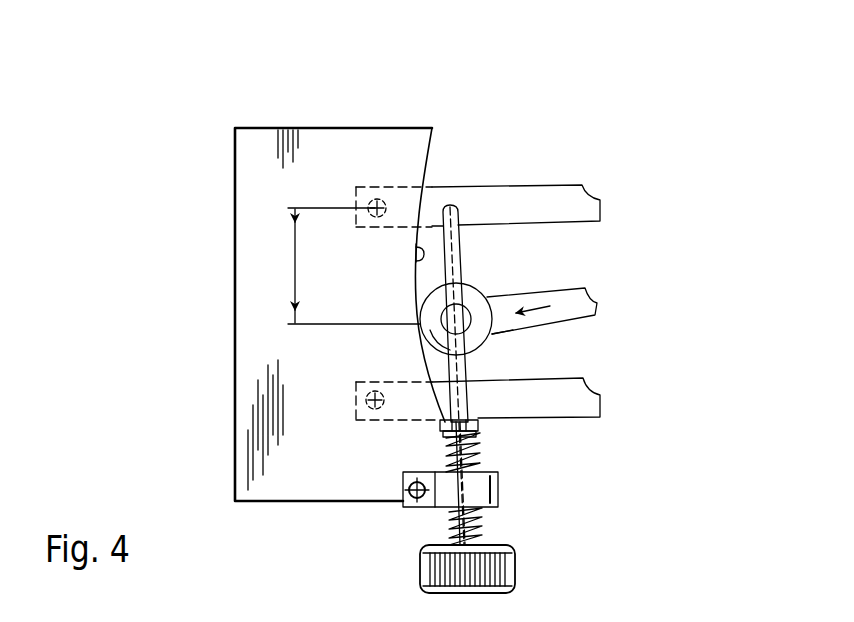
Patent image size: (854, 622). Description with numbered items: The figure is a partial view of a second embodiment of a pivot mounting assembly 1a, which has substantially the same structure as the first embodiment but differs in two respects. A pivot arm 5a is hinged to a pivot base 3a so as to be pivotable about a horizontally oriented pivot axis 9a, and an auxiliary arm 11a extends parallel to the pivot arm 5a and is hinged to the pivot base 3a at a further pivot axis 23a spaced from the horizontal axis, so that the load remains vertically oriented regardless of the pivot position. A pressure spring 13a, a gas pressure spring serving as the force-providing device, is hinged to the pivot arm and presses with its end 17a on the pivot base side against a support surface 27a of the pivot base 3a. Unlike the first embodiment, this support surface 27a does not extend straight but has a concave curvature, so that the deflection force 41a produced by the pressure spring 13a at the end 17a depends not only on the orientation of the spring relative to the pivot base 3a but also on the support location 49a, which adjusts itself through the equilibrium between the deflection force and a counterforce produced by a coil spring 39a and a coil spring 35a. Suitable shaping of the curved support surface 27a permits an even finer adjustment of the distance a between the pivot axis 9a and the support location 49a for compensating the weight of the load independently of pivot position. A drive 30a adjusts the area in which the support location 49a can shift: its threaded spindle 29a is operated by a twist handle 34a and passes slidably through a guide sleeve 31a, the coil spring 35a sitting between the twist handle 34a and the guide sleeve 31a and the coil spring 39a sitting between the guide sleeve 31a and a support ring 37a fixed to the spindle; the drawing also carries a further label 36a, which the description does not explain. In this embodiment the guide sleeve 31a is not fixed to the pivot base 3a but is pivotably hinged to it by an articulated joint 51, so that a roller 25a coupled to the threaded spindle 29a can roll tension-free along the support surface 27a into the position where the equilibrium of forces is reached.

The pivot mounting assembly 1a is at (571, 90).
The pivot base 3a is at (350, 127).
The pivot arm 5a is at (568, 182).
The pivot axis 9a is at (372, 205).
The auxiliary arm 11a is at (600, 395).
The pressure spring 13a is at (599, 299).
The end of the pressure spring on the pivot base side 17a is at (513, 330).
The further pivot axis 23a is at (370, 402).
The roller 25a is at (470, 295).
The support surface 27a is at (415, 250).
The threaded spindle 29a is at (455, 205).
The drive 30a is at (626, 488).
The guide sleeve 31a is at (500, 483).
The twist handle 34a is at (425, 572).
The coil spring 35a is at (483, 525).
The spring arrangement 36a is at (586, 521).
The support ring 37a is at (481, 424).
The coil spring 39a is at (440, 445).
The deflection force 41a is at (552, 306).
The support location 49a is at (418, 326).
The articulated joint 51 is at (408, 495).
The distance a is at (330, 265).